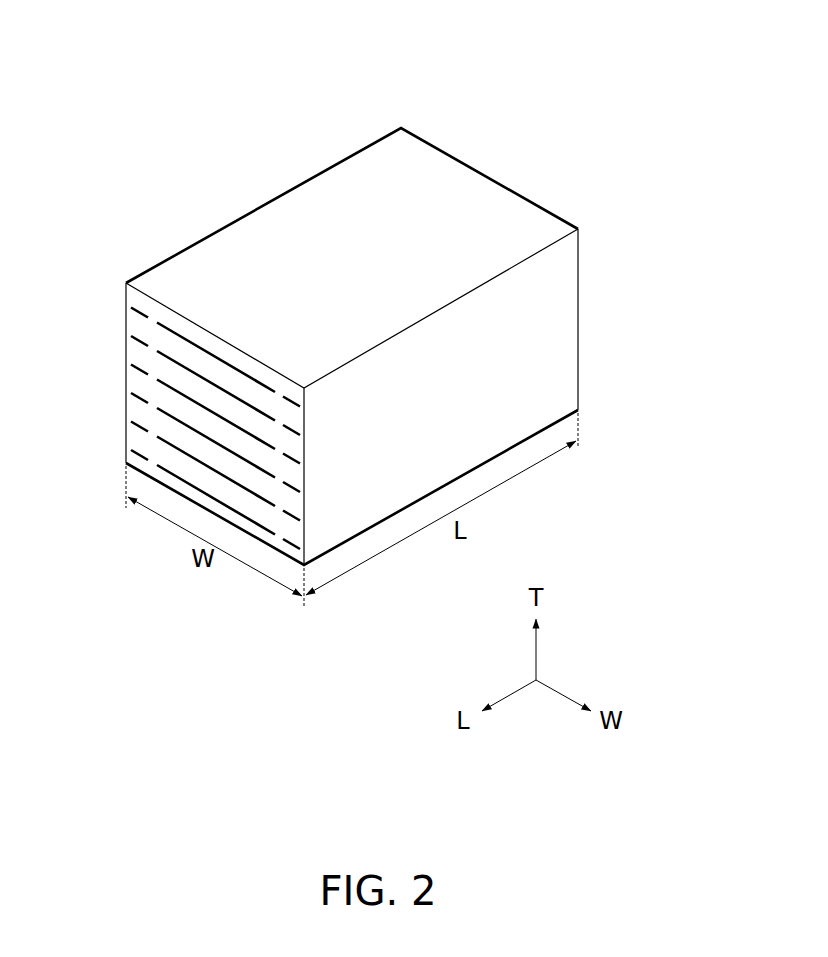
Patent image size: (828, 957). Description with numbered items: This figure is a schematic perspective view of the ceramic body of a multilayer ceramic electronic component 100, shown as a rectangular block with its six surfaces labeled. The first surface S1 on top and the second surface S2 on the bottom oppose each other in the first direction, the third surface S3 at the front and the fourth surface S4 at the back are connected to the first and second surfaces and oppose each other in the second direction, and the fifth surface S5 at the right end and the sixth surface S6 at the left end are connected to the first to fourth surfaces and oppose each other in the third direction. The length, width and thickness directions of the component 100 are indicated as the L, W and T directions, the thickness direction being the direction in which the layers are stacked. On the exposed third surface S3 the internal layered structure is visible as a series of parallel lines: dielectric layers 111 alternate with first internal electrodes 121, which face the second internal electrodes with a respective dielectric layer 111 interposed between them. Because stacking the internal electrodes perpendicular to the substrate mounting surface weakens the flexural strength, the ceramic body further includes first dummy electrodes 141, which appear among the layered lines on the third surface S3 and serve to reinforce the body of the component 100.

The multilayer ceramic electronic component 100 is at (152, 24).
The dielectric layer 111 is at (141, 363).
The first internal electrode 121 is at (144, 334).
The first dummy electrode 141 is at (142, 405).
The first surface S1 is at (354, 187).
The second surface S2 is at (360, 512).
The third surface S3 is at (208, 486).
The fourth surface S4 is at (474, 201).
The fifth surface S5 is at (556, 337).
The sixth surface S6 is at (201, 279).